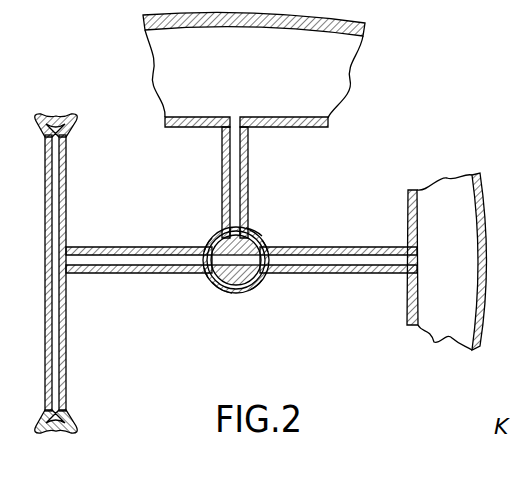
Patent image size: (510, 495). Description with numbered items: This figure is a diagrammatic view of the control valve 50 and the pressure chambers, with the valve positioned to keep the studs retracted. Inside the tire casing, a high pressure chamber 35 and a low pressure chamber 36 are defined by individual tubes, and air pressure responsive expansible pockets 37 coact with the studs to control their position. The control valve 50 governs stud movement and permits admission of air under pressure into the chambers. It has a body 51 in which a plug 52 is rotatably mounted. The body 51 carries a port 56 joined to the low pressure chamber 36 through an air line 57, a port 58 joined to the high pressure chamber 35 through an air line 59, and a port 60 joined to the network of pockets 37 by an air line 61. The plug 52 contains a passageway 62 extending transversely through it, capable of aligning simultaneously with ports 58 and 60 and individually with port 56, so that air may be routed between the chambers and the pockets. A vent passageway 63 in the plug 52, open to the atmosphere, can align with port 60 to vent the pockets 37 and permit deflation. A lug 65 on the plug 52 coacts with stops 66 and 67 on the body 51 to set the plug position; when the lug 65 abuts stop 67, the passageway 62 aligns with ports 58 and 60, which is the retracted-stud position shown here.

The high pressure chamber 35 is at (461, 281).
The low pressure chamber 36 is at (262, 78).
The air pressure responsive expansible pockets 37 is at (60, 113).
The control valve 50 is at (231, 269).
The body 51 is at (212, 229).
The plug 52 is at (253, 233).
The port 56 is at (238, 229).
The air line 57 is at (241, 160).
The port 58 is at (272, 247).
The air line 59 is at (370, 258).
The port 60 is at (203, 244).
The air line 61 is at (124, 260).
The passageway 62 is at (207, 281).
The vent passageway 63 is at (227, 292).
The lug 65 is at (221, 294).
The stop 66 is at (233, 286).
The stop 67 is at (259, 284).